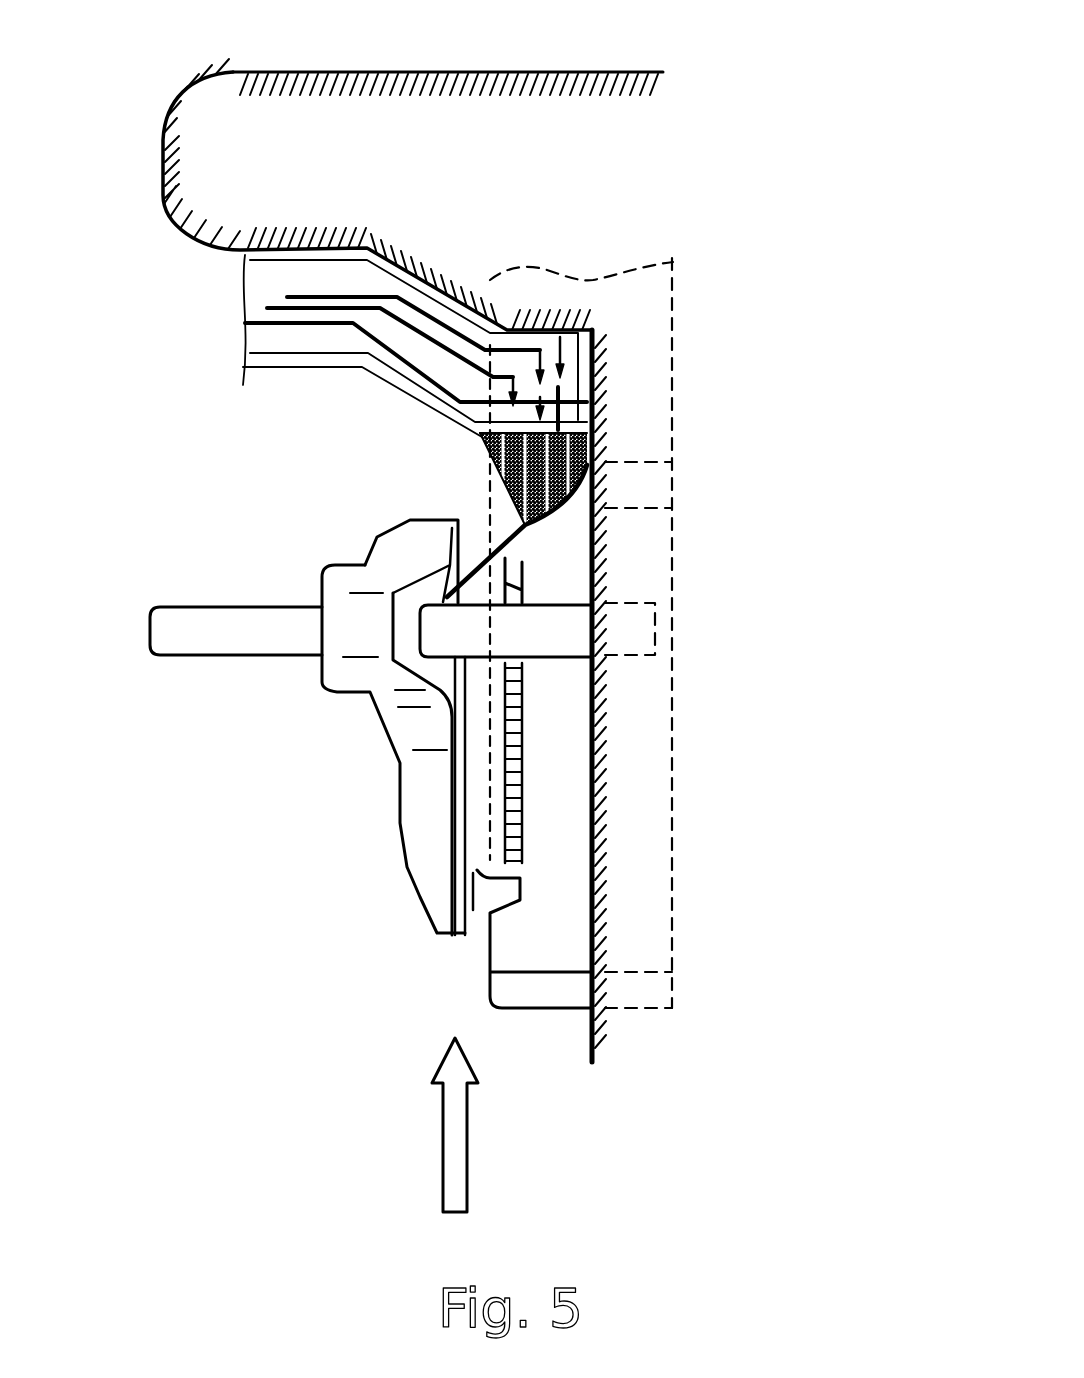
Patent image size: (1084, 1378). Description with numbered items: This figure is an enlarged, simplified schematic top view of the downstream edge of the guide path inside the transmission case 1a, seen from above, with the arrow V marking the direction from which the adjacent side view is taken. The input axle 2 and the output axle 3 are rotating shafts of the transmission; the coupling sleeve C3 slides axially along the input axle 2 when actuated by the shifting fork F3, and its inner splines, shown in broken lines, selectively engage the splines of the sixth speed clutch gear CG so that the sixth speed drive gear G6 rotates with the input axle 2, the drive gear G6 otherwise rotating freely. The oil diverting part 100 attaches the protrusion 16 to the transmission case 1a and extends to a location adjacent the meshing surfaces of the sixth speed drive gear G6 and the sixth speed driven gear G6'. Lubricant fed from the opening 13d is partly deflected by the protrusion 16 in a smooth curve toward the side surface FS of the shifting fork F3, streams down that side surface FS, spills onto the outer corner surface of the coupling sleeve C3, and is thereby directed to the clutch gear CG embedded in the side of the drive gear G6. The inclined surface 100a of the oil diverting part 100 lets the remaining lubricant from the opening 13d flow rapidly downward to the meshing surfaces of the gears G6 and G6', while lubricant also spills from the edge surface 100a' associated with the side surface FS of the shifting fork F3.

The transmission case 1a is at (490, 72).
The input axle 2 is at (540, 657).
The output axle 3 is at (198, 605).
The opening 13d is at (594, 418).
The protrusion 16 is at (594, 515).
The oil diverting part 100 is at (490, 436).
The inclined surface 100a is at (629, 520).
The edge surface 100a' is at (318, 602).
The side surface FS is at (440, 595).
The shifting fork F3 is at (407, 823).
The coupling sleeve C3 is at (477, 872).
The sixth speed clutch gear CG is at (523, 863).
The sixth speed drive gear G6 is at (722, 633).
The sixth speed driven gear G6' is at (674, 305).
The arrow V is at (474, 1125).